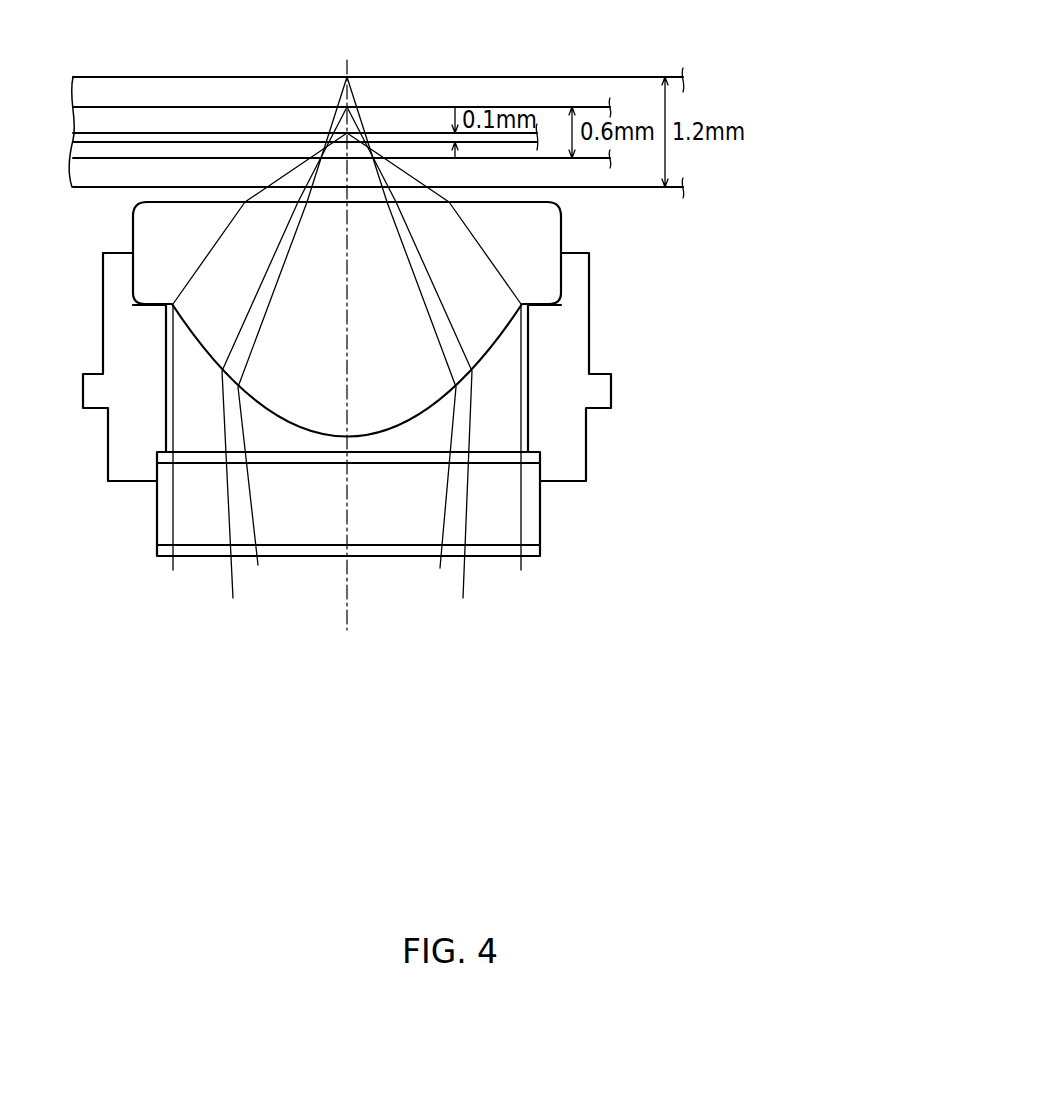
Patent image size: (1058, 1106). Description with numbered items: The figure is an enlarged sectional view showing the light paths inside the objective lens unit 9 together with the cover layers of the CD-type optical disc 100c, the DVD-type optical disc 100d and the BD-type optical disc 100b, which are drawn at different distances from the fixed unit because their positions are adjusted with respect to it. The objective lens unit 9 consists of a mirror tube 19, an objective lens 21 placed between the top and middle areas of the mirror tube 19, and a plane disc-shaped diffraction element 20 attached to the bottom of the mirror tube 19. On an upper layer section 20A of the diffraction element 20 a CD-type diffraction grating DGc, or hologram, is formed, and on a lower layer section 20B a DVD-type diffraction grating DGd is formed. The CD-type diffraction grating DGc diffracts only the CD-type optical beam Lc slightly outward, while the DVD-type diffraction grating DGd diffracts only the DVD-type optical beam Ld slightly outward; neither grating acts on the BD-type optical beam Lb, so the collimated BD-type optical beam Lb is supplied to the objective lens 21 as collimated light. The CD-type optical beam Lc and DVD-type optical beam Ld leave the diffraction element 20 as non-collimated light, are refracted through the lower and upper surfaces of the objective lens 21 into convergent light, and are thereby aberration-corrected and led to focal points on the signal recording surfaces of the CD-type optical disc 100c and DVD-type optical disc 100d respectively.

The BD-type optical disc 100b is at (437, 120).
The DVD-type optical disc 100d is at (555, 110).
The CD-type optical disc 100c is at (645, 90).
The objective lens 21 is at (560, 225).
The mirror tube 19 is at (589, 283).
The CD-type diffraction grating DGc is at (438, 429).
The upper layer section 20A is at (498, 408).
The diffraction element 20 is at (515, 500).
The lower layer section 20B is at (512, 607).
The DVD-type diffraction grating DGd is at (399, 578).
The CD-type optical beam Lc is at (258, 562).
The DVD-type optical beam Ld is at (233, 573).
The BD-type optical beam Lb is at (173, 505).
The objective lens unit 9 is at (455, 485).